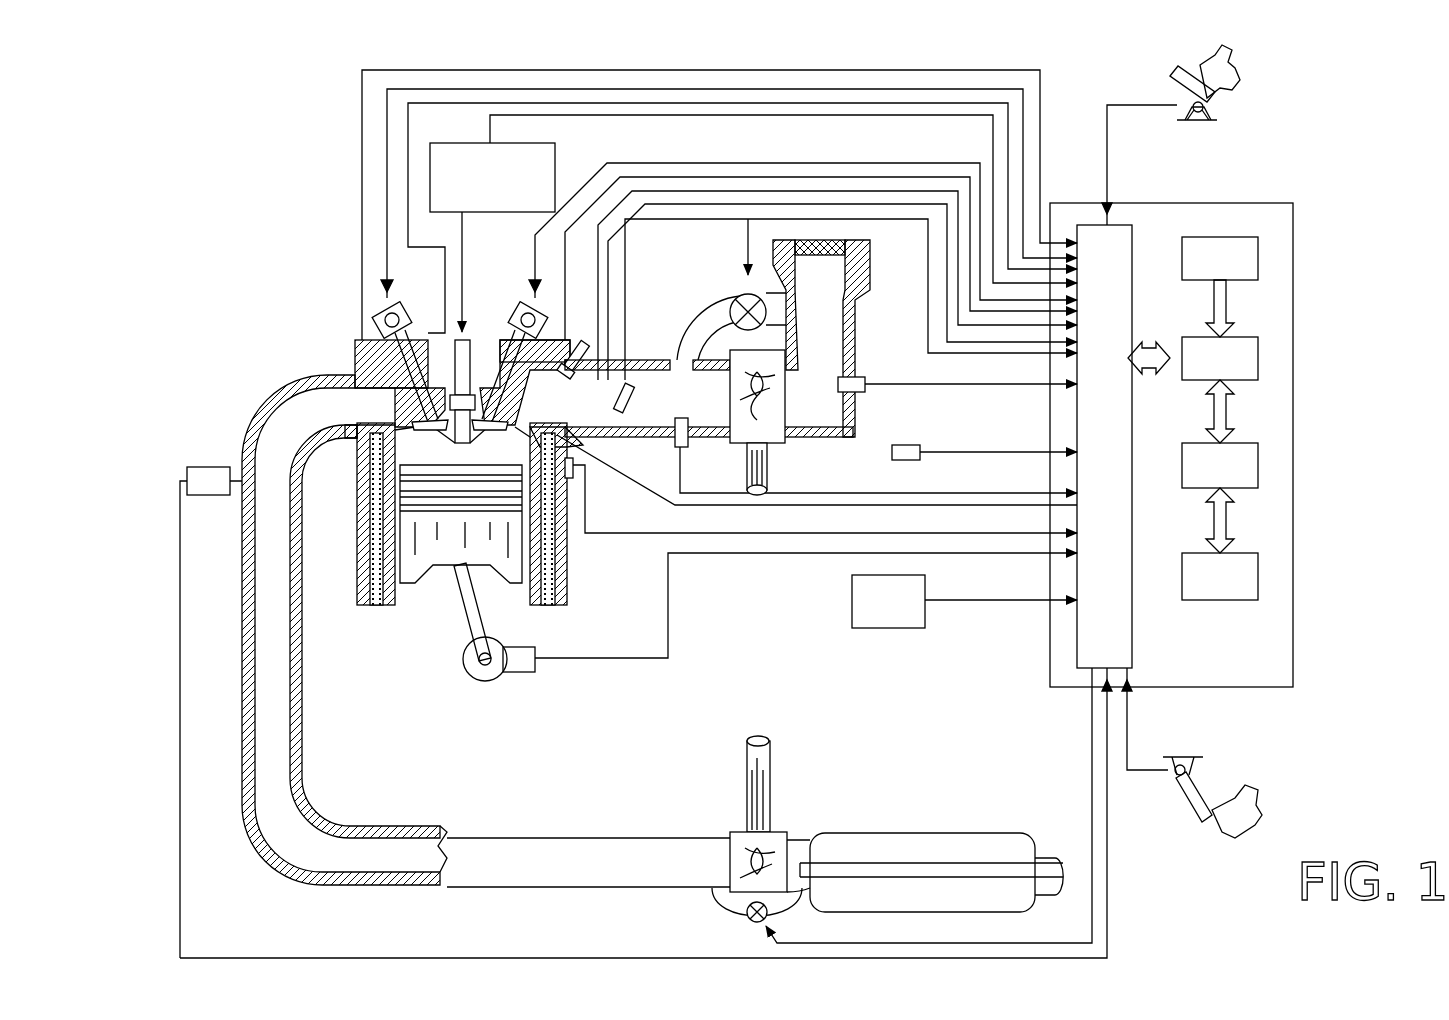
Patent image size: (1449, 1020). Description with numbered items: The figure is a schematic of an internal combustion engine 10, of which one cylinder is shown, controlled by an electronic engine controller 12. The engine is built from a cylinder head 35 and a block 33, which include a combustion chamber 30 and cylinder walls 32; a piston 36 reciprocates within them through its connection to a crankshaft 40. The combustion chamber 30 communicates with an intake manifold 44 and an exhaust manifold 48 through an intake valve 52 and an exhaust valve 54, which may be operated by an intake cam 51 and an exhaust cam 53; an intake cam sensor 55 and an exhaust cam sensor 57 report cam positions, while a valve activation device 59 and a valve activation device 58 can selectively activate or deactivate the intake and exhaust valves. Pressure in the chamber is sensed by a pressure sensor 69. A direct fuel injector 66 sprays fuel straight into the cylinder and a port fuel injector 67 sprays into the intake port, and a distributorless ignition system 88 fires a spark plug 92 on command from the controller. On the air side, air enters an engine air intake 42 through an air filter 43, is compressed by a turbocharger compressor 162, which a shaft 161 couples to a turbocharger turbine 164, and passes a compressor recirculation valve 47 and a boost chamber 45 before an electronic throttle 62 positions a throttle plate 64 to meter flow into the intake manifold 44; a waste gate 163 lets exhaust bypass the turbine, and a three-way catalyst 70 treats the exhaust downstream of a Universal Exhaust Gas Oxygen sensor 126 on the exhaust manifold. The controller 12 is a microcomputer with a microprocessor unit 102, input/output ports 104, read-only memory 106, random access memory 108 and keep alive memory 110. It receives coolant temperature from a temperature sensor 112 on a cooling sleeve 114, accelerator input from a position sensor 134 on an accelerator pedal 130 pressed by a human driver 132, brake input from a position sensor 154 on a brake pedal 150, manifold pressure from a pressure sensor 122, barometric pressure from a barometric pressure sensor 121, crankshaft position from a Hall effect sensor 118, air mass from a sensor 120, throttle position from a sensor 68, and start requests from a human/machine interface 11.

The internal combustion engine 10 is at (285, 292).
The electronic engine controller 12 is at (1290, 205).
The input/output ports 104 is at (1134, 230).
The read-only memory 106 is at (1260, 257).
The microprocessor unit 102 is at (1260, 362).
The random access memory 108 is at (1260, 467).
The keep alive memory 110 is at (1260, 577).
The accelerator pedal 130 is at (1175, 82).
The human driver 132 is at (1238, 75).
The position sensor 134 is at (1218, 110).
The distributorless ignition system 88 is at (556, 153).
The spark plug 92 is at (470, 338).
The exhaust cam sensor 57 is at (385, 322).
The exhaust cam 53 is at (388, 308).
The valve activation device 58 is at (402, 323).
The intake cam 51 is at (522, 300).
The valve activation device 59 is at (520, 345).
The intake cam sensor 55 is at (548, 326).
The port fuel injector 67 is at (575, 351).
The throttle position sensor 68 is at (630, 362).
The electronic throttle 62 is at (632, 394).
The throttle plate 64 is at (622, 412).
The intake manifold 44 is at (598, 408).
The boost chamber 45 is at (708, 408).
The engine air intake 42 is at (686, 262).
The compressor recirculation valve 47 is at (740, 298).
The air filter 43 is at (835, 262).
The air mass sensor 120 is at (858, 378).
The barometric pressure sensor 121 is at (918, 444).
The pressure sensor 122 is at (676, 448).
The shaft 161 is at (745, 472).
The turbocharger compressor 162 is at (760, 430).
The direct fuel injector 66 is at (576, 470).
The temperature sensor 112 is at (817, 485).
The cooling sleeve 114 is at (552, 556).
The Hall effect sensor 118 is at (525, 648).
The human/machine interface 11 is at (964, 601).
The cylinder head 35 is at (350, 338).
The exhaust valve 54 is at (368, 392).
The exhaust manifold 48 is at (332, 415).
The block 33 is at (350, 490).
The combustion chamber 30 is at (372, 532).
The cylinder walls 32 is at (400, 587).
The piston 36 is at (445, 555).
The crankshaft 40 is at (475, 680).
The pressure sensor 69 is at (447, 433).
The intake valve 52 is at (507, 410).
The Universal Exhaust Gas Oxygen sensor 126 is at (188, 470).
The position sensor 154 is at (1170, 762).
The brake pedal 150 is at (1205, 816).
The turbocharger turbine 164 is at (735, 832).
The three-way catalyst 70 is at (850, 833).
The waste gate 163 is at (748, 920).